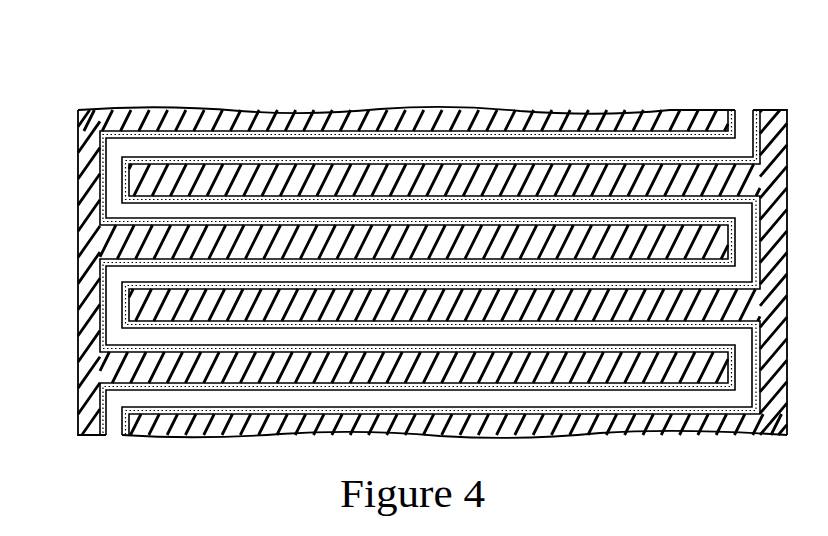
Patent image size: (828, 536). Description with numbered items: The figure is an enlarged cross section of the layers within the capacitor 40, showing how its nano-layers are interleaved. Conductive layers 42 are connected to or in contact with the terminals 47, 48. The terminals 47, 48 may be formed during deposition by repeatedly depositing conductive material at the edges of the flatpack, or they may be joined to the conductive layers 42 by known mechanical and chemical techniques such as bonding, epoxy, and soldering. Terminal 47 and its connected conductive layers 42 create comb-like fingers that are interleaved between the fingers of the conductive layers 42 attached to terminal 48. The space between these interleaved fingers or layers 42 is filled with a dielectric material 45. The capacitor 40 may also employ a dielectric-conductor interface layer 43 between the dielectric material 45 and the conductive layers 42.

The capacitor 40 is at (145, 92).
The conductive layers 42 is at (115, 370).
The dielectric-conductor interface layer 43 is at (125, 303).
The dielectric material 45 is at (118, 178).
The terminal 47 is at (79, 129).
The terminal 48 is at (771, 112).